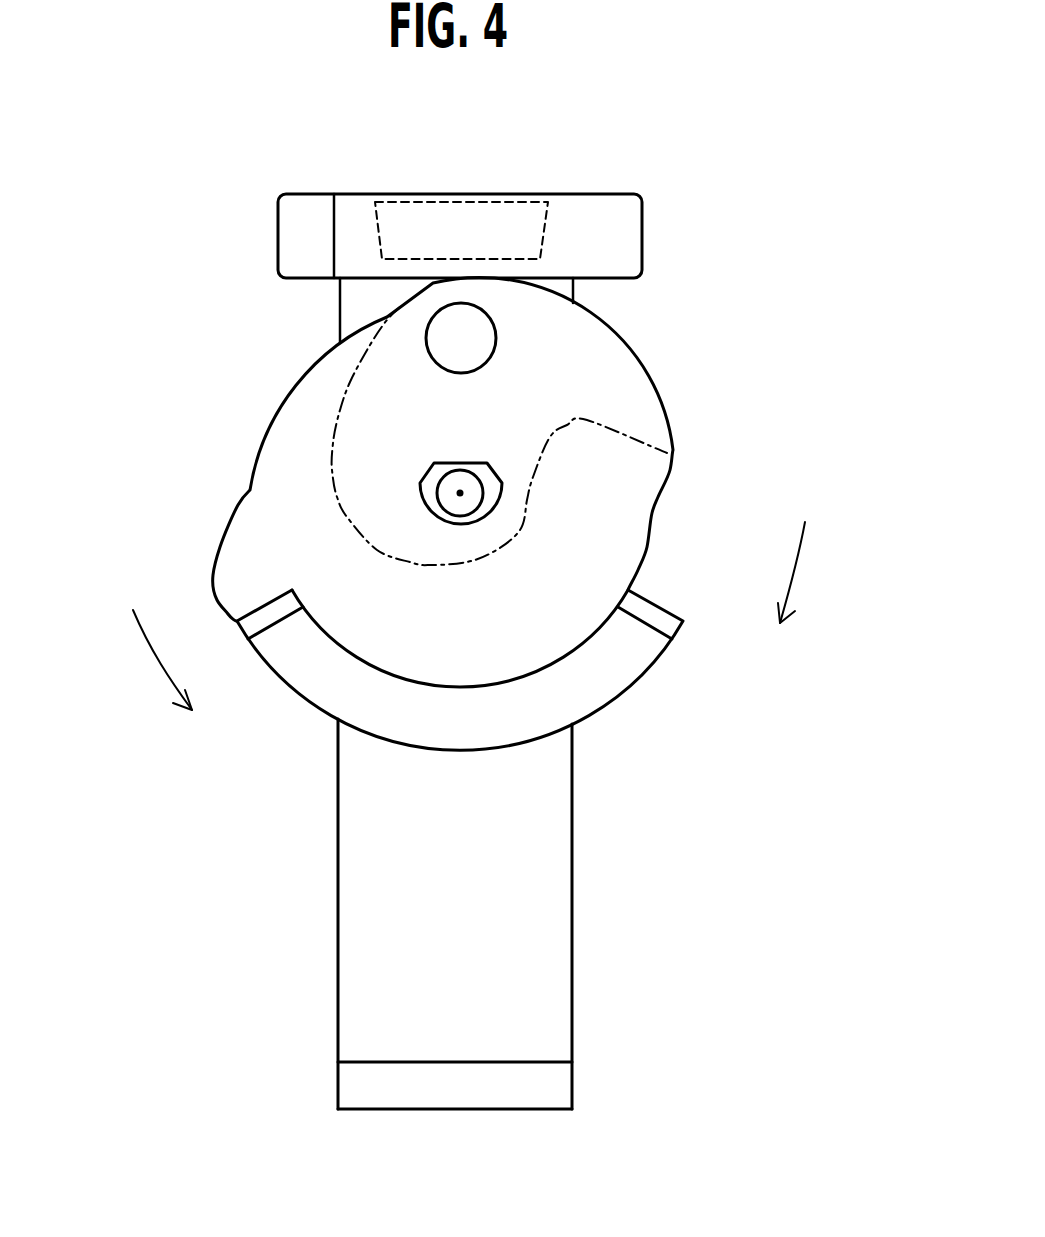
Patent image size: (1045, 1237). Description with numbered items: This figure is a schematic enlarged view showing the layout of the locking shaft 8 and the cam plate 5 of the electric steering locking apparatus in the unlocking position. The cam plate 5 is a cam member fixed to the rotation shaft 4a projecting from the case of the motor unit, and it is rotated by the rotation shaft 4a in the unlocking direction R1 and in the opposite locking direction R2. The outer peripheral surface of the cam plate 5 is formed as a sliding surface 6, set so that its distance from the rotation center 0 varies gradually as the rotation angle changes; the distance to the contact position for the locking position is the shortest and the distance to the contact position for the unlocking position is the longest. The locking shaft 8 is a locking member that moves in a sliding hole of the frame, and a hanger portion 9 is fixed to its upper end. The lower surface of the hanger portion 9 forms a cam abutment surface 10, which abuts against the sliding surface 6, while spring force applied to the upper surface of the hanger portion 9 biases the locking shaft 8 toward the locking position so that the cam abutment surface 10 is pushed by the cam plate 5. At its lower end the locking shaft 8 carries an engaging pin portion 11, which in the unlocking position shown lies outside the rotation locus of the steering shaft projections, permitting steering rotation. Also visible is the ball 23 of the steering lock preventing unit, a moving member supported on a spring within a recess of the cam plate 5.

The hanger portion 9 is at (623, 240).
The cam abutment surface 10 is at (573, 288).
The cam plate 5 is at (663, 412).
The ball 23 is at (442, 337).
The sliding surface 6 is at (350, 387).
The rotation shaft 4a is at (448, 502).
The rotation center 0 is at (467, 498).
The locking shaft 8 is at (553, 893).
The engaging pin portion 11 is at (553, 1087).
The unlocking direction R1 is at (157, 662).
The locking direction R2 is at (800, 572).